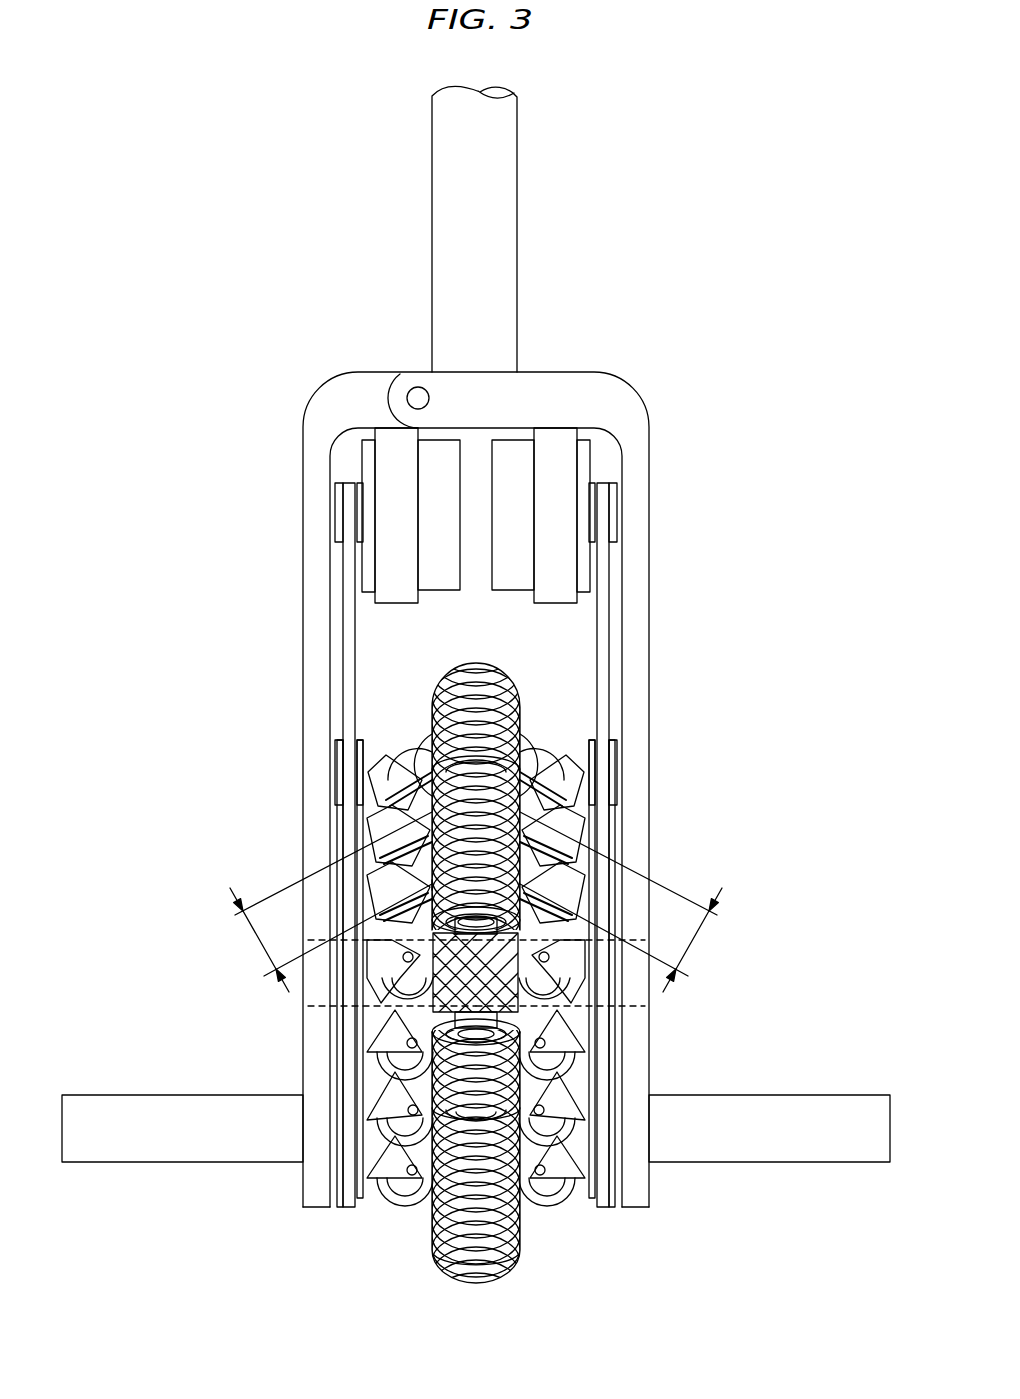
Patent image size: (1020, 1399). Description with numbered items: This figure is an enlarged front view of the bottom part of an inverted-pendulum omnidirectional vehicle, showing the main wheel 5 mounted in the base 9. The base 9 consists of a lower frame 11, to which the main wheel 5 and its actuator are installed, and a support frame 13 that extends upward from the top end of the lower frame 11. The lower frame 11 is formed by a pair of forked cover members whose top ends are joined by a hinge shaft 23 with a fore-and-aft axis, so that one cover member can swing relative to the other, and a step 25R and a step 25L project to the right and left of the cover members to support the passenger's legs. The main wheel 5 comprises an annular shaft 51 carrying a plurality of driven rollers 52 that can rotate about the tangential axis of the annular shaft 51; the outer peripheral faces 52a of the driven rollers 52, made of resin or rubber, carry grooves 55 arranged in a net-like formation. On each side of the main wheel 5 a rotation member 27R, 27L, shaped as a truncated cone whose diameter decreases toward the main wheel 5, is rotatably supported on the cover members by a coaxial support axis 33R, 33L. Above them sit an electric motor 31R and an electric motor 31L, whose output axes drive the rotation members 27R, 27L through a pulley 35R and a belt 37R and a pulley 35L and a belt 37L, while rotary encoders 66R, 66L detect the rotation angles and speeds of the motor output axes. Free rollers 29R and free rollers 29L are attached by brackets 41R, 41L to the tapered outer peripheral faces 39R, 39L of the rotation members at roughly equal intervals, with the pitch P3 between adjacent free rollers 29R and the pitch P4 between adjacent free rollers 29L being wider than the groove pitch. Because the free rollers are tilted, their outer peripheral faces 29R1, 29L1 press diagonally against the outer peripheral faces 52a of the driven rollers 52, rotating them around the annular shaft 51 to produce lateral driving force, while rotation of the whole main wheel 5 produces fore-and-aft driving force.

The main wheel 5 is at (439, 1159).
The base 9 is at (506, 647).
The lower frame 11 is at (606, 360).
The support frame 13 is at (508, 192).
The hinge shaft 23 is at (414, 388).
The step 25R is at (118, 1095).
The step 25L is at (834, 1095).
The rotation member 27R is at (385, 952).
The rotation member 27L is at (580, 952).
The free roller 29R is at (425, 798).
The free roller 29L is at (530, 795).
The outer peripheral face 29R1 is at (405, 740).
The outer peripheral face 29L1 is at (550, 740).
The electric motor 31R is at (435, 478).
The electric motor 31L is at (562, 465).
The support axis 33R is at (312, 938).
The support axis 33L is at (640, 938).
The pulley 35R is at (343, 768).
The pulley 35L is at (609, 768).
The belt 37R is at (348, 555).
The belt 37L is at (602, 553).
The tapered outer peripheral face 39R is at (368, 1083).
The tapered outer peripheral face 39L is at (584, 1083).
The bracket 41R is at (383, 1107).
The bracket 41L is at (569, 1107).
The annular shaft 51 is at (475, 1123).
The driven roller 52 is at (437, 1005).
The outer peripheral face 52a is at (438, 830).
The groove 55 is at (515, 830).
The rotary encoder 66R is at (372, 440).
The rotary encoder 66L is at (580, 450).
The pitch between adjacent free rollers 29R P3 is at (259, 940).
The pitch between adjacent free rollers 29L P4 is at (696, 940).